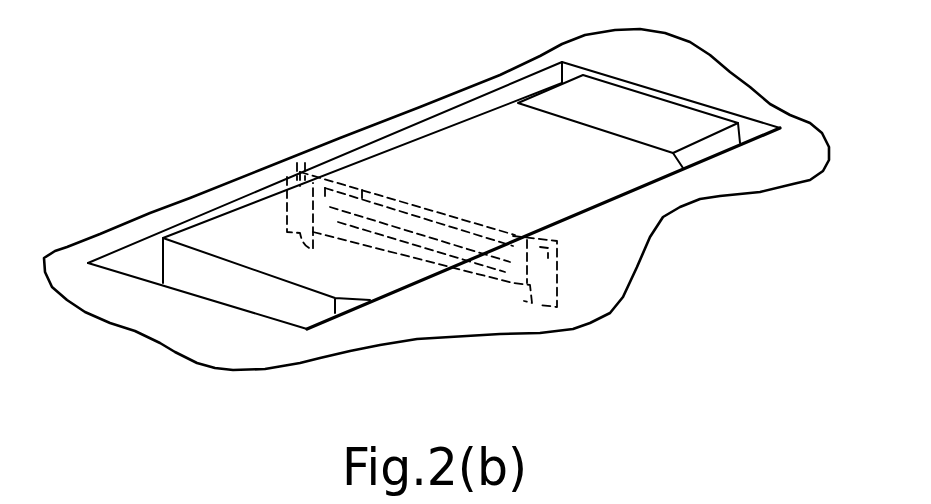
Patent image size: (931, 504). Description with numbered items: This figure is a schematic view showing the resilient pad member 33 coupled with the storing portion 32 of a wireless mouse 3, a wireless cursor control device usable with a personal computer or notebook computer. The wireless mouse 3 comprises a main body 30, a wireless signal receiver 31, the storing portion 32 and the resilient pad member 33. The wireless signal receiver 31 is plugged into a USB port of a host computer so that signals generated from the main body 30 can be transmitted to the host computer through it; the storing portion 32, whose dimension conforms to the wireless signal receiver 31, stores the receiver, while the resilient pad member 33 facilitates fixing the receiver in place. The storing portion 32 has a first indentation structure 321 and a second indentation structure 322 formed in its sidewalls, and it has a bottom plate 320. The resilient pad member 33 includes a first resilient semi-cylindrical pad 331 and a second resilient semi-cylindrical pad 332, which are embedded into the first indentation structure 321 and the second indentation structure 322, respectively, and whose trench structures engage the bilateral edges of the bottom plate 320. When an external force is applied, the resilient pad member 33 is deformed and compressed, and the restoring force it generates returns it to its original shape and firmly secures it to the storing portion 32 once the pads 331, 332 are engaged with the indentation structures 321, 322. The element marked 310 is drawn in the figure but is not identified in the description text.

The wireless mouse 3 is at (737, 58).
The main body 30 is at (712, 178).
The wireless signal receiver 31 is at (420, 157).
The block on circuit board 310 is at (558, 103).
The storing portion 32 is at (138, 262).
The resilient pad member 33 is at (434, 263).
The bottom plate 320 is at (457, 270).
The first indentation structure 321 is at (290, 182).
The second indentation structure 322 is at (535, 300).
The first resilient semi-cylindrical pad 331 is at (300, 162).
The second resilient semi-cylindrical pad 332 is at (558, 268).